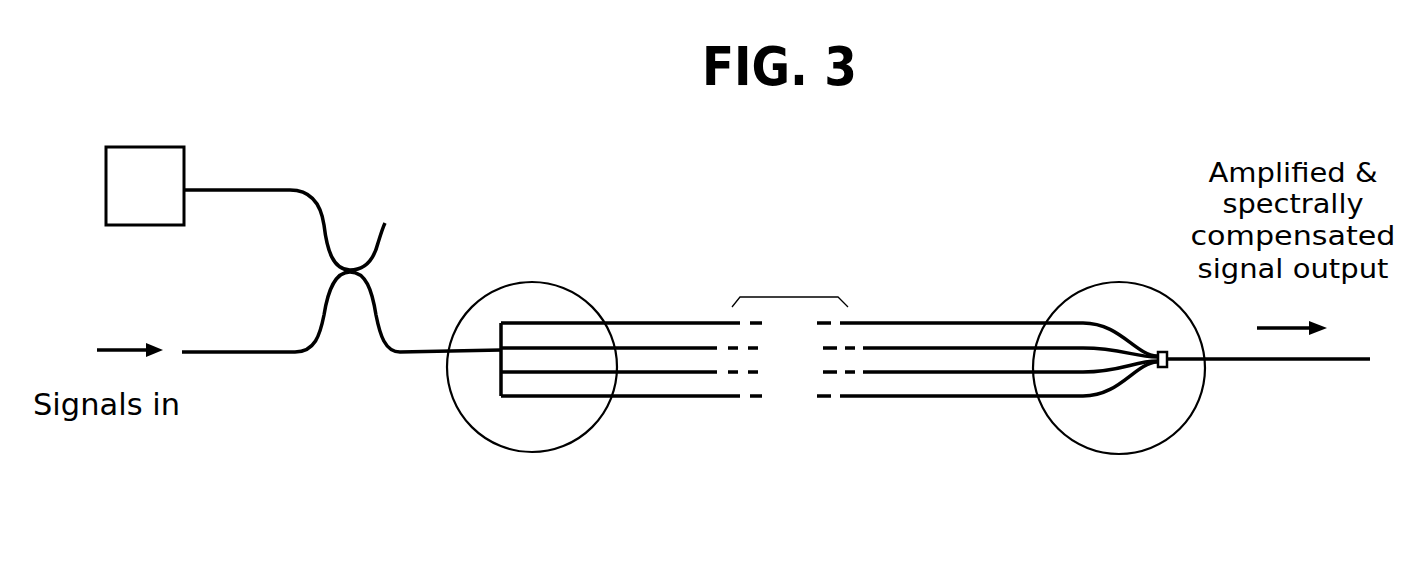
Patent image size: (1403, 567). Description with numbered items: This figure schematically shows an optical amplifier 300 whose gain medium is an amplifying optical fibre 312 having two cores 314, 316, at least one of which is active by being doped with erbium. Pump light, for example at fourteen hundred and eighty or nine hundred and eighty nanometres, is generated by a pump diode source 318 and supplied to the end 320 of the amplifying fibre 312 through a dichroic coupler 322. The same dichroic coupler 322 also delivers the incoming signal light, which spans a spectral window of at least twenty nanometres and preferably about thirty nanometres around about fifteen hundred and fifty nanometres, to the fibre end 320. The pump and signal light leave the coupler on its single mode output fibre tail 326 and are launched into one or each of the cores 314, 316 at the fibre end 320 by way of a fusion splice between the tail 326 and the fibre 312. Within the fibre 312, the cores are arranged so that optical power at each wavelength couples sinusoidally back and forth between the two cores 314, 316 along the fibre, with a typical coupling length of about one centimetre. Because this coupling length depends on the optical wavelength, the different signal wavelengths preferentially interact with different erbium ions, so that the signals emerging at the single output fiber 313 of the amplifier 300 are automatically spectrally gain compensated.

The amplifier 300 is at (830, 237).
The amplifying optical fibre 312 is at (841, 428).
The output fiber 313 is at (1250, 362).
The core 314 is at (687, 347).
The core 316 is at (663, 373).
The pump diode source 318 is at (132, 218).
The end of the fibre 320 is at (501, 396).
The dichroic coupler 322 is at (414, 230).
The single mode output fibre tail 326 is at (422, 352).